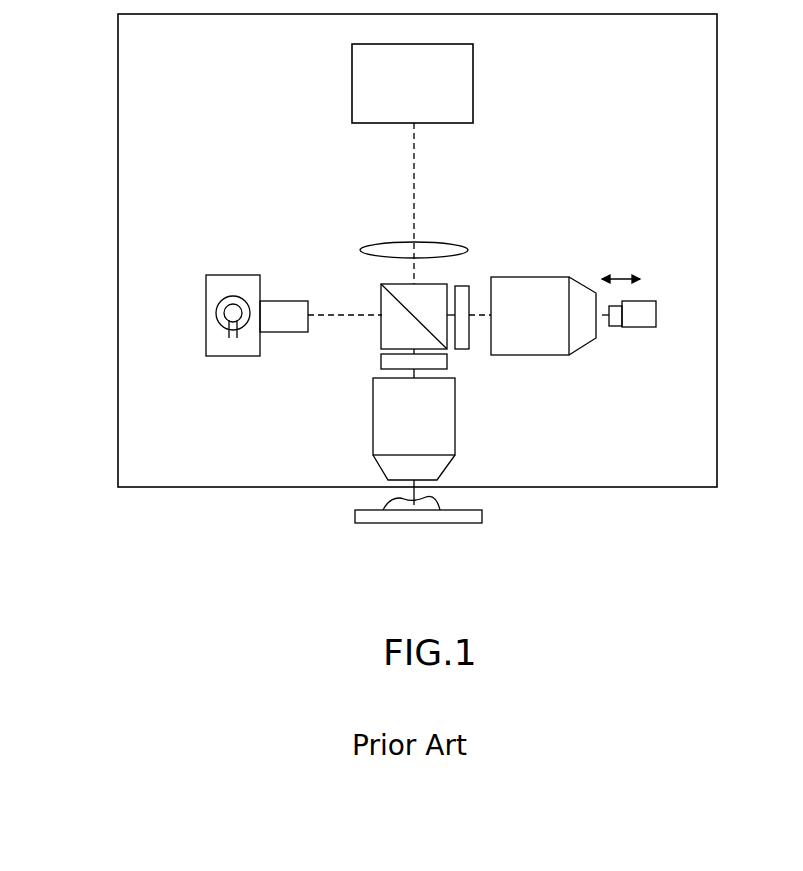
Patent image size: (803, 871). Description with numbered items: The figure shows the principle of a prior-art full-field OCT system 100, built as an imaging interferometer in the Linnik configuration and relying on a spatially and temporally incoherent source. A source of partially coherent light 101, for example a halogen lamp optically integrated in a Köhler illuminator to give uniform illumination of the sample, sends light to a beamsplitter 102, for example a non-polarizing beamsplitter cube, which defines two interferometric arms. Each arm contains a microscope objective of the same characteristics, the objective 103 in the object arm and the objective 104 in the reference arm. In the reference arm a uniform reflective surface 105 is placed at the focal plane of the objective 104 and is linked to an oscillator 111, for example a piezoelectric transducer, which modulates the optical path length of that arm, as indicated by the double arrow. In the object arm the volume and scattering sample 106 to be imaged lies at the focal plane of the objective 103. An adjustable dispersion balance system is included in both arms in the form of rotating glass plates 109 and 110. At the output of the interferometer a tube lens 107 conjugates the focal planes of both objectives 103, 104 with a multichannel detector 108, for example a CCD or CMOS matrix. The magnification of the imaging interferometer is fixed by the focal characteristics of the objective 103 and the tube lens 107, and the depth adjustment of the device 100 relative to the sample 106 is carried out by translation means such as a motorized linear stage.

The FF-OCT system 100 is at (118, 160).
The source of partially coherent light 101 is at (240, 285).
The beamsplitter 102 is at (382, 300).
The microscope objective 103 is at (437, 415).
The microscope objective 104 is at (523, 342).
The uniform reflective surface 105 is at (612, 327).
The sample 106 is at (430, 505).
The tube lens 107 is at (436, 242).
The multichannel detector 108 is at (367, 92).
The rotating glass plate 109 is at (382, 358).
The rotating glass plate 110 is at (462, 285).
The oscillator 111 is at (640, 308).